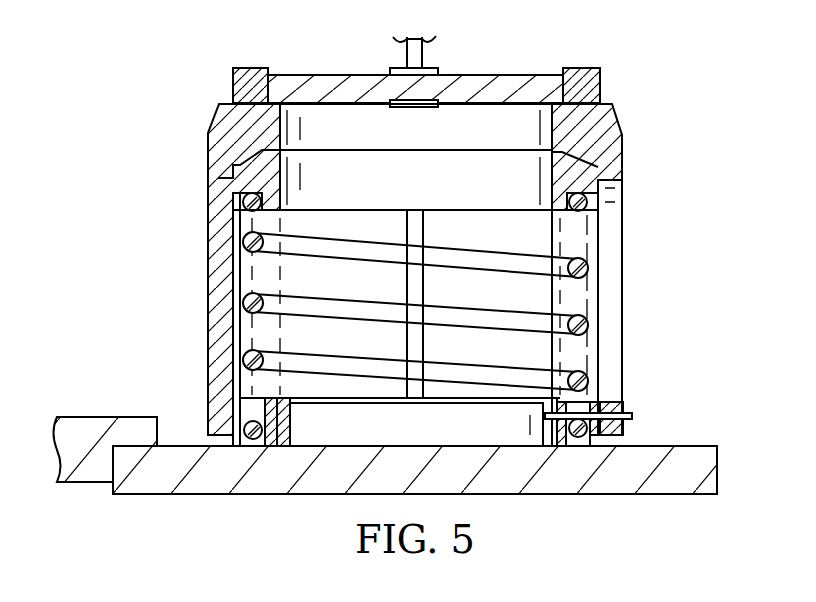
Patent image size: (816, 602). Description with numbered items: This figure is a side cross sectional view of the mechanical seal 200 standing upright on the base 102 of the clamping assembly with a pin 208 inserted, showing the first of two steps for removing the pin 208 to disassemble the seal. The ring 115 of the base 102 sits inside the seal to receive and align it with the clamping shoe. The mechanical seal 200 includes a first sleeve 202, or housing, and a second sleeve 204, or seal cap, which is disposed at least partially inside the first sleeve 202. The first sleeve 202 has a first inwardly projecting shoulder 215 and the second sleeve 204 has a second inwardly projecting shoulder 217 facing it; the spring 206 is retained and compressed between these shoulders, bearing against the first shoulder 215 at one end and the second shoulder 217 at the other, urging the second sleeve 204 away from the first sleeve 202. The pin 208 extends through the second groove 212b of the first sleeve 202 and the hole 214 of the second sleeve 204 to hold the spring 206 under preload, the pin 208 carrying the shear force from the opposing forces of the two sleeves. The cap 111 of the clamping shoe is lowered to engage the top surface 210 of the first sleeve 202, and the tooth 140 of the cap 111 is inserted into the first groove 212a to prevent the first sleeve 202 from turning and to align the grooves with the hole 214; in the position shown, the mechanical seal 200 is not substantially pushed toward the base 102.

The mechanical seal 200 is at (116, 240).
The first sleeve 202 is at (208, 305).
The top surface 210 is at (227, 160).
The first inwardly projecting shoulder 215 is at (247, 183).
The cap 111 is at (612, 105).
The tooth 140 is at (423, 217).
The first groove 212a is at (414, 279).
The spring 206 is at (562, 252).
The second groove 212b is at (613, 345).
The hole 214 is at (598, 400).
The pin 208 is at (632, 437).
The ring 115 is at (292, 432).
The base 102 is at (202, 502).
The second inwardly projecting shoulder 217 is at (252, 440).
The second sleeve 204 is at (580, 440).